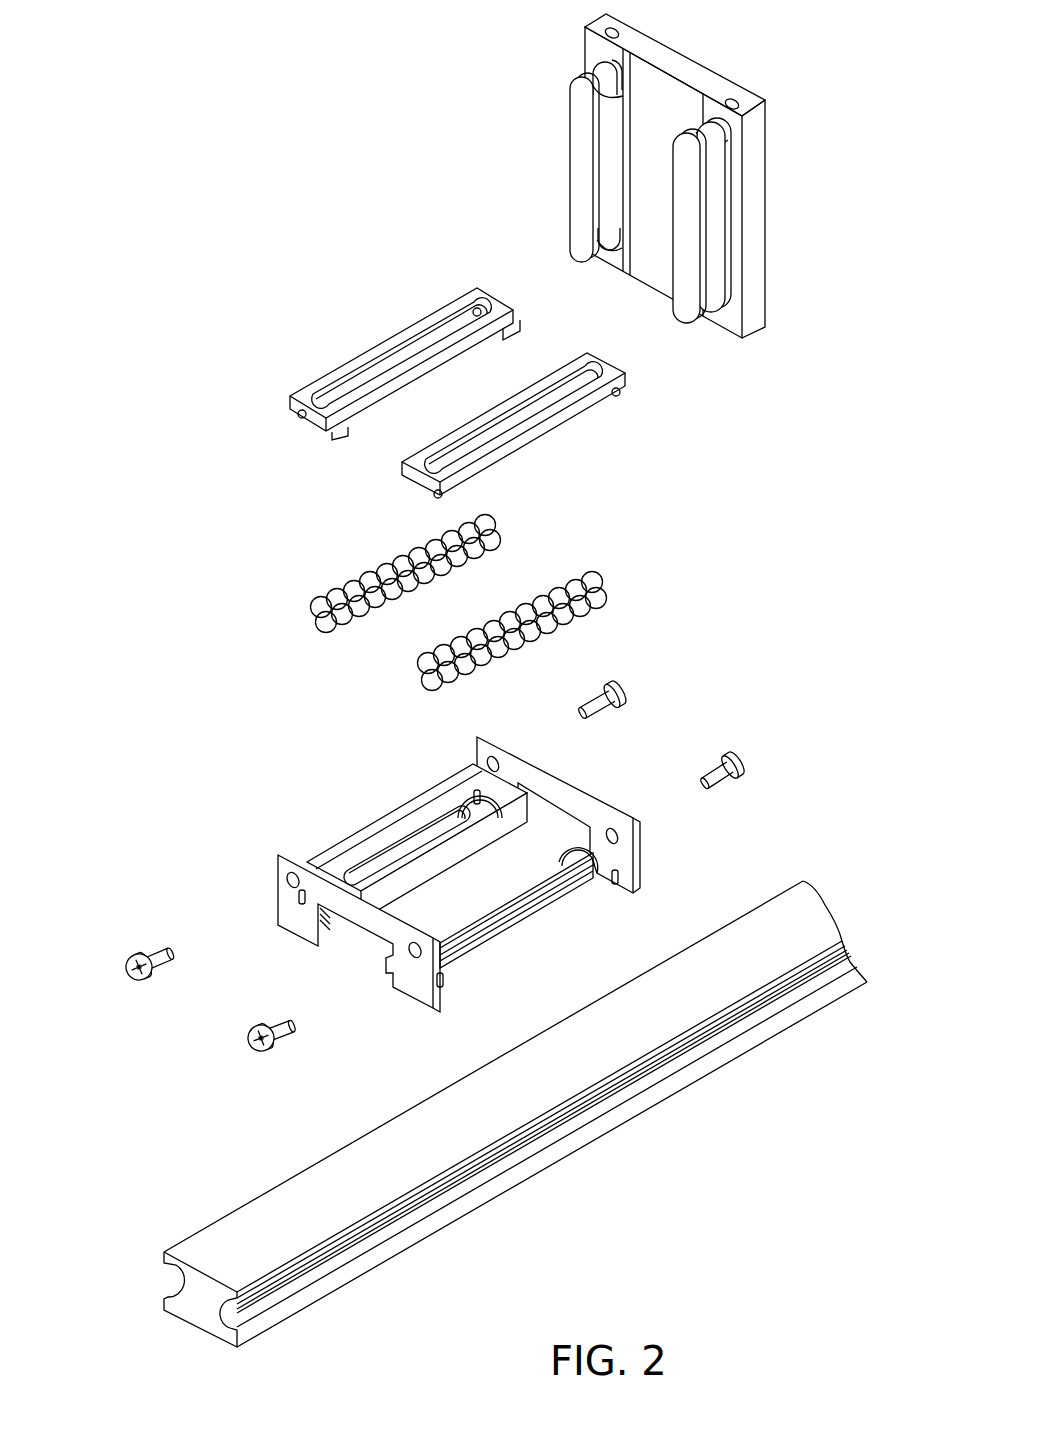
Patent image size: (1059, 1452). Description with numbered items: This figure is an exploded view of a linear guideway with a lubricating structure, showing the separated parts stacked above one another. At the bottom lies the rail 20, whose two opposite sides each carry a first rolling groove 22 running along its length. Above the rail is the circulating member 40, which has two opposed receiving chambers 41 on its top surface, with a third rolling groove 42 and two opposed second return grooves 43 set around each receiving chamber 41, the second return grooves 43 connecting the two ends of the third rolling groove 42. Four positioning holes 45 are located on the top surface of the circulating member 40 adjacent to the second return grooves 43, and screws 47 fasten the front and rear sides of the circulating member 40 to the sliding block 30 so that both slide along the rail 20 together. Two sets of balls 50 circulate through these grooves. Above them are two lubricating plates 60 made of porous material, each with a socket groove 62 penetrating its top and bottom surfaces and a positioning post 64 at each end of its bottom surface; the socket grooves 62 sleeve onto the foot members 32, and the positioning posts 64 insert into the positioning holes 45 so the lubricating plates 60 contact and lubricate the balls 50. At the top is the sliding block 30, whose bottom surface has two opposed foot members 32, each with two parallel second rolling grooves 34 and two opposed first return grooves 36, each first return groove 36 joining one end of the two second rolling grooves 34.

The rail 20 is at (475, 1132).
The first rolling groove 22 is at (165, 1304).
The sliding block 30 is at (674, 172).
The foot member 32 is at (578, 143).
The second rolling groove 34 is at (605, 118).
The first return groove 36 is at (600, 72).
The circulating member 40 is at (445, 881).
The receiving chamber 41 is at (373, 888).
The third rolling groove 42 is at (383, 852).
The second return groove 43 is at (465, 805).
The positioning hole 45 is at (477, 790).
The screw 47 is at (627, 693).
The balls 50 is at (507, 525).
The lubricating plate 60 is at (452, 407).
The socket groove 62 is at (367, 380).
The positioning post 64 is at (477, 313).